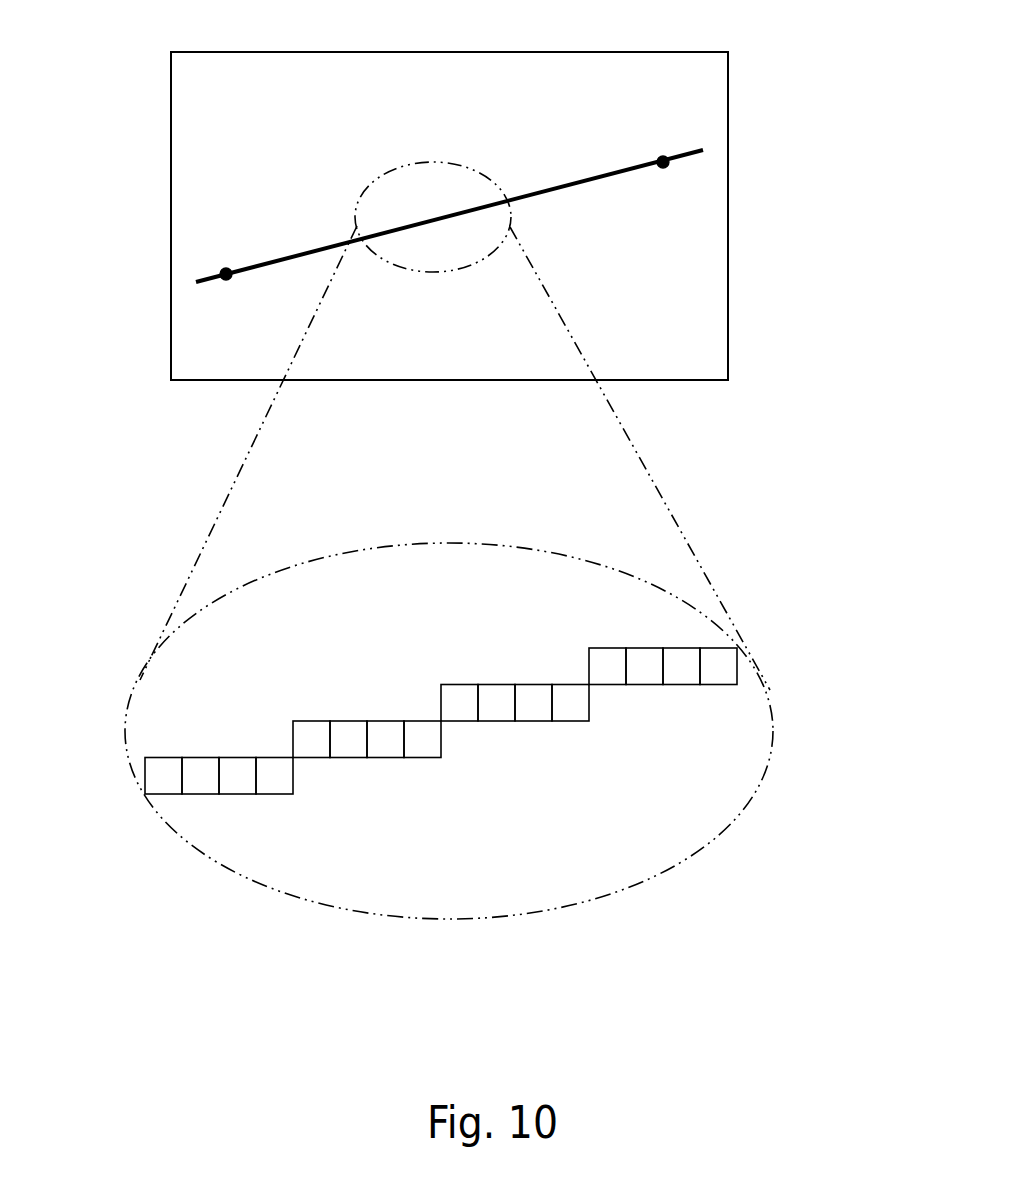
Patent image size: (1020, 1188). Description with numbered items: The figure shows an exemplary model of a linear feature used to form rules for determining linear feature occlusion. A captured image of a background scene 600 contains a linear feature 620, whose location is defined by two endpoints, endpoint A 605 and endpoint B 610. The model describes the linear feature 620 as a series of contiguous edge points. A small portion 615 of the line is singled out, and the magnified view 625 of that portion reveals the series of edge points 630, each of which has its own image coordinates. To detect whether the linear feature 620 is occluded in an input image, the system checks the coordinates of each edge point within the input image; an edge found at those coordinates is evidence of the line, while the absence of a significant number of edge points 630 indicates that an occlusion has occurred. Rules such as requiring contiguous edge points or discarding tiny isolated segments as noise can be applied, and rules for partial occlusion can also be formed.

The captured image of a background scene 600 is at (171, 82).
The endpoint A 605 is at (226, 268).
The endpoint B 610 is at (663, 150).
The small portion of the line 615 is at (425, 162).
The linear feature 620 is at (568, 187).
The magnified view 625 is at (677, 870).
The edge points 630 is at (357, 758).